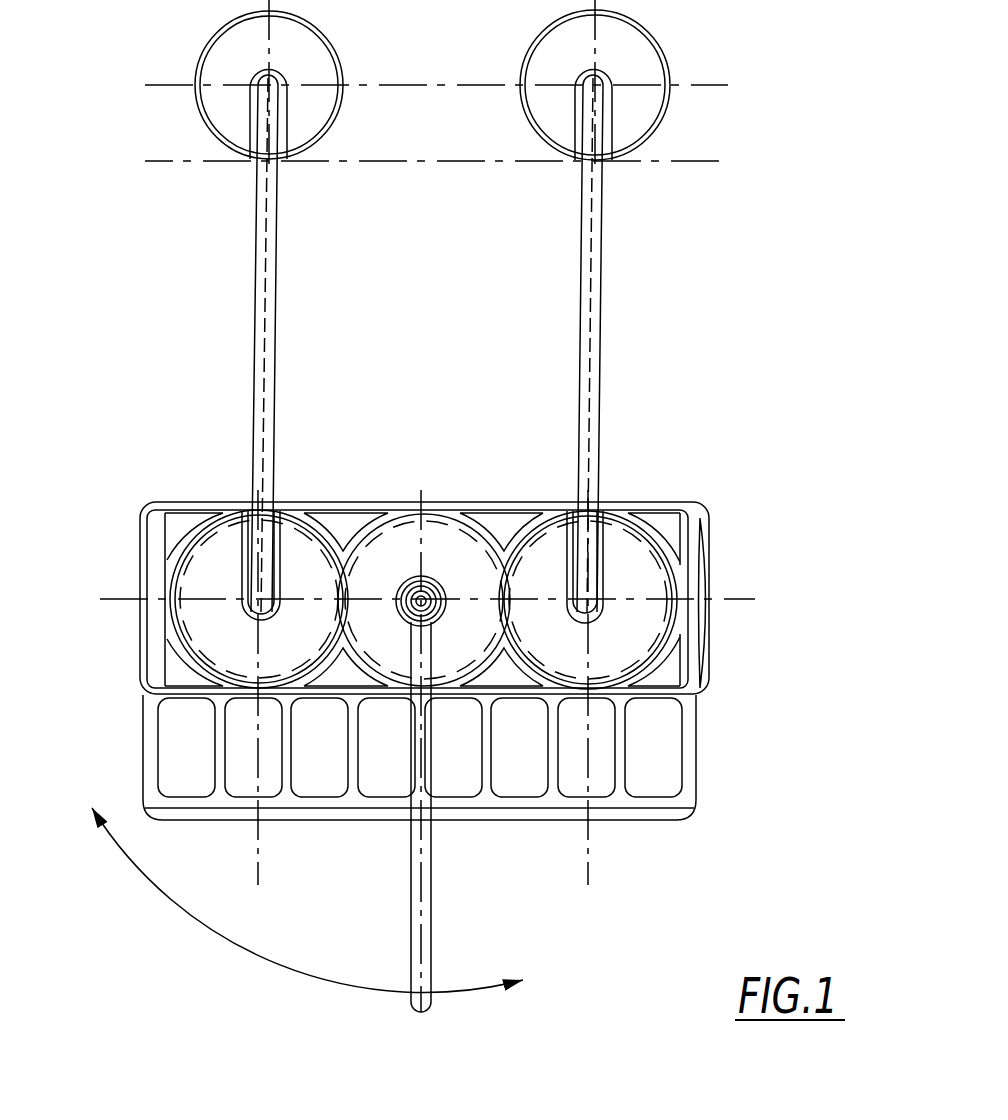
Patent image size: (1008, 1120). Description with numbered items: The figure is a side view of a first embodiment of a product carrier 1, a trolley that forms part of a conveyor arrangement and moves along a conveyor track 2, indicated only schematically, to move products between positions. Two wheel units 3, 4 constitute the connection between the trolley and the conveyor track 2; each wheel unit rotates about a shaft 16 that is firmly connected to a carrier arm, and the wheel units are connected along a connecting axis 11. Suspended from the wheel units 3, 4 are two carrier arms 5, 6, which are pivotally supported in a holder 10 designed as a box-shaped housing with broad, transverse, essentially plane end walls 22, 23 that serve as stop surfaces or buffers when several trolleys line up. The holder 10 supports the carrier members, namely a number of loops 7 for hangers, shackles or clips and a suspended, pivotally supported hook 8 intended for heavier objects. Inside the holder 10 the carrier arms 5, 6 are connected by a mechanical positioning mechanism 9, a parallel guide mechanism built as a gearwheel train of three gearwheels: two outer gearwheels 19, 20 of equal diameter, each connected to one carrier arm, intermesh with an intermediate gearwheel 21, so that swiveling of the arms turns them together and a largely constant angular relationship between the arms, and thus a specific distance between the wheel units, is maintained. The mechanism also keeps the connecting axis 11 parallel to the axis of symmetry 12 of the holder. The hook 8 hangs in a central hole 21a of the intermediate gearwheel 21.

The product carrier 1 is at (695, 475).
The conveyor track 2 is at (682, 165).
The wheel unit 3 is at (200, 125).
The wheel unit 4 is at (668, 112).
The carrier arm 5 is at (258, 313).
The carrier arm 6 is at (598, 348).
The loops 7 is at (148, 745).
The hook 8 is at (423, 910).
The positioning mechanism 9 is at (667, 542).
The holder 10 is at (487, 503).
The connecting axis 11 is at (700, 92).
The axis of symmetry 12 is at (727, 612).
The shaft 16 is at (262, 80).
The outer gearwheel 19 is at (202, 558).
The outer gearwheel 20 is at (650, 660).
The intermediate gearwheel 21 is at (355, 517).
The central hole 21a is at (403, 517).
The end wall 22 is at (140, 613).
The end wall 23 is at (715, 583).